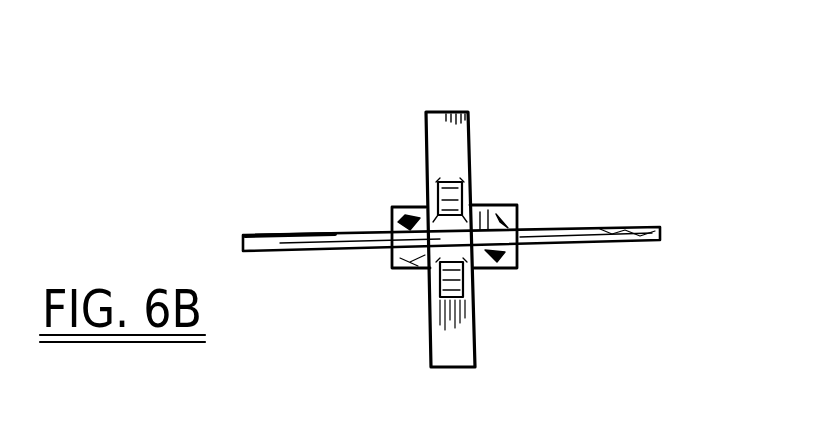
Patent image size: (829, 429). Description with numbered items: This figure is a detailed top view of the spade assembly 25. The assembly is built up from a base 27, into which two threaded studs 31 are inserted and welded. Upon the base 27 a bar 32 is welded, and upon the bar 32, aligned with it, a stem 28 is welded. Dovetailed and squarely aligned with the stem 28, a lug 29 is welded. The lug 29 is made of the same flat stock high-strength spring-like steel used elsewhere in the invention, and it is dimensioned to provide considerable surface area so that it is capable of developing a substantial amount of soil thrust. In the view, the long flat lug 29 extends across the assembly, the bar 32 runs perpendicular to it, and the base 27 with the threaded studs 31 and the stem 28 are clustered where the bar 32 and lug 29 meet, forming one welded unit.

The spade assembly 25 is at (326, 214).
The base 27 is at (388, 226).
The stem 28 is at (425, 204).
The lug 29 is at (300, 235).
The threaded stud 31 is at (393, 270).
The bar 32 is at (468, 135).